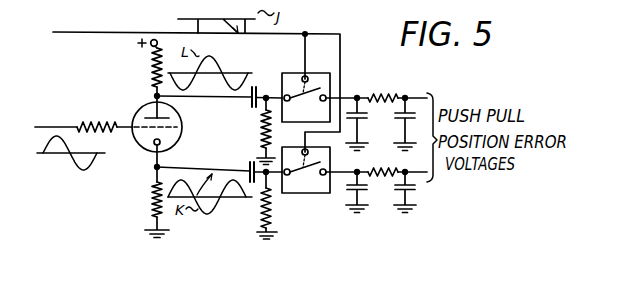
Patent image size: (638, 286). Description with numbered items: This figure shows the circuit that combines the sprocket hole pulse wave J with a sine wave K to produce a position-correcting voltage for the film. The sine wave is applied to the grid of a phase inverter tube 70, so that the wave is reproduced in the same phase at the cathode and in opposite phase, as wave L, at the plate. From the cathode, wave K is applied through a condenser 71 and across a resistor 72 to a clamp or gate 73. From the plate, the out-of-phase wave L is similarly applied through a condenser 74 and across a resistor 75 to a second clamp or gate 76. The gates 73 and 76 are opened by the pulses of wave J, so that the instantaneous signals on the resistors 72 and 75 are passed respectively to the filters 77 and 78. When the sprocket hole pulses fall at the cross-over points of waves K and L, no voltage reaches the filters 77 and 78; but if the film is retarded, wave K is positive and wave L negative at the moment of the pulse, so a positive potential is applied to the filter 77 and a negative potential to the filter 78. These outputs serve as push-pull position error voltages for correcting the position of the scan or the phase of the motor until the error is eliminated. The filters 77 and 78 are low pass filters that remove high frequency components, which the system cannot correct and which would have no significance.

The phase inverter tube 70 is at (135, 108).
The condenser 71 is at (246, 163).
The resistor 72 is at (261, 212).
The clamp or gate 73 is at (317, 193).
The condenser 74 is at (257, 90).
The resistor 75 is at (259, 130).
The clamp or gate 76 is at (314, 78).
The filter 77 is at (376, 182).
The filter 78 is at (383, 112).